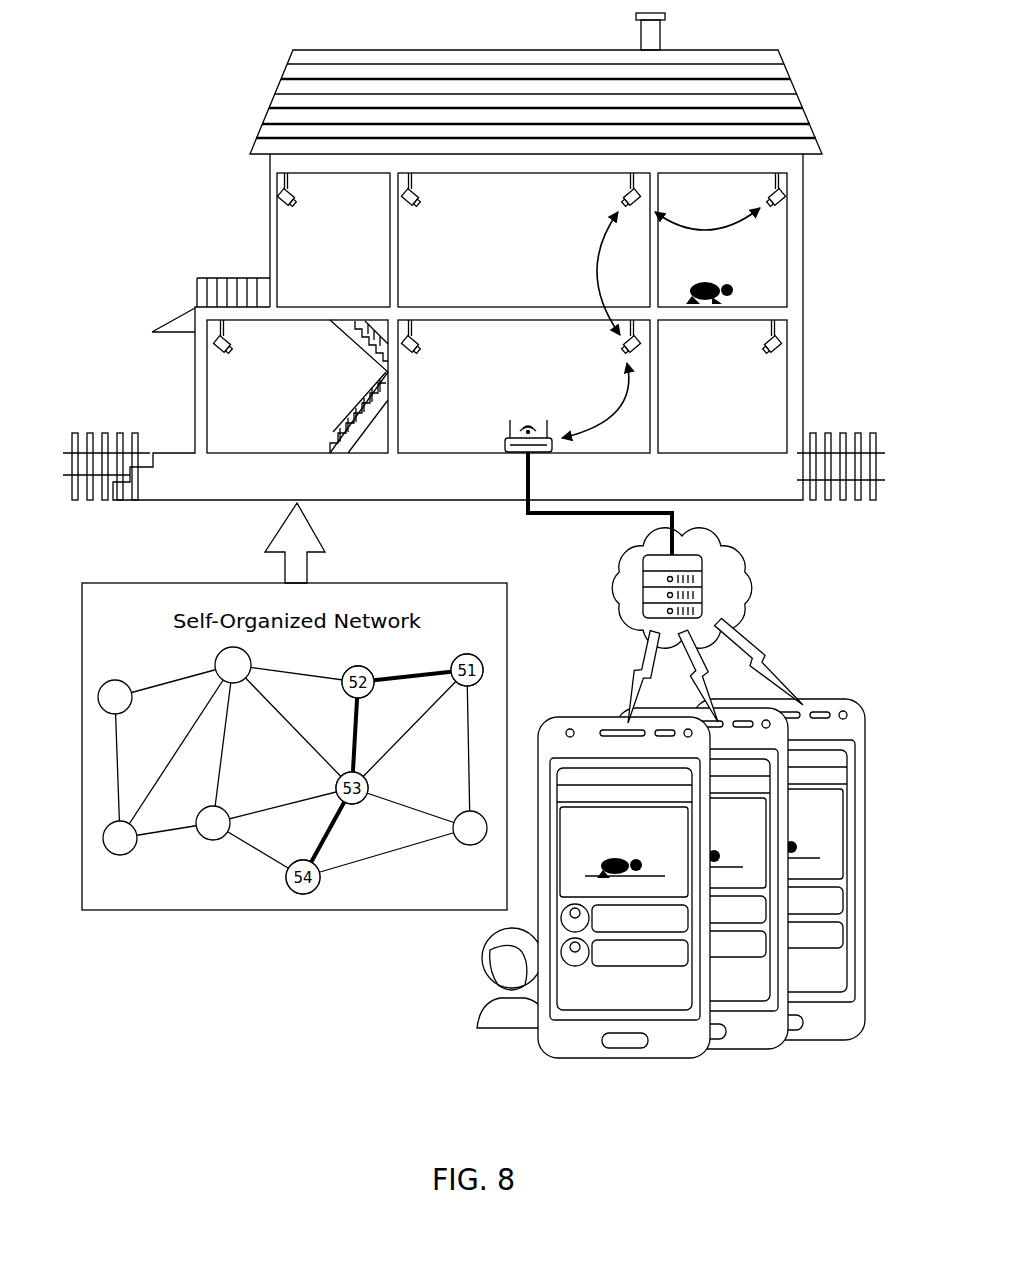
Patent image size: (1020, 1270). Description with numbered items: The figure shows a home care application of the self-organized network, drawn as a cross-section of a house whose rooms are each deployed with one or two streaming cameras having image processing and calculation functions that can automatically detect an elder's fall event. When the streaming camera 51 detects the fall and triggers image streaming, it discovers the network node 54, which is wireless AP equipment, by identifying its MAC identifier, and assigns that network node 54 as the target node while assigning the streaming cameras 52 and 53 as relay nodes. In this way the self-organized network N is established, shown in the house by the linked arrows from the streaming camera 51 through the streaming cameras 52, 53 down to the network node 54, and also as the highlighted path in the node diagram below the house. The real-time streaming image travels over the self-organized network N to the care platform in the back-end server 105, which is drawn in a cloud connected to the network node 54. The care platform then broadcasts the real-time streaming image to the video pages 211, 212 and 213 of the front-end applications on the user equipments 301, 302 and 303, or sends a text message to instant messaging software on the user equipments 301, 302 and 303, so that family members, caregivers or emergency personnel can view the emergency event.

The streaming camera 51 is at (618, 429).
The streaming camera 52 is at (491, 435).
The streaming camera 53 is at (488, 562).
The network node 54 is at (419, 643).
The self-organized network N is at (583, 283).
The back-end server 105 is at (682, 588).
The video page 211 is at (624, 852).
The video page 212 is at (702, 843).
The video page 213 is at (779, 834).
The user equipment 301 is at (624, 901).
The user equipment 302 is at (702, 892).
The user equipment 303 is at (779, 882).